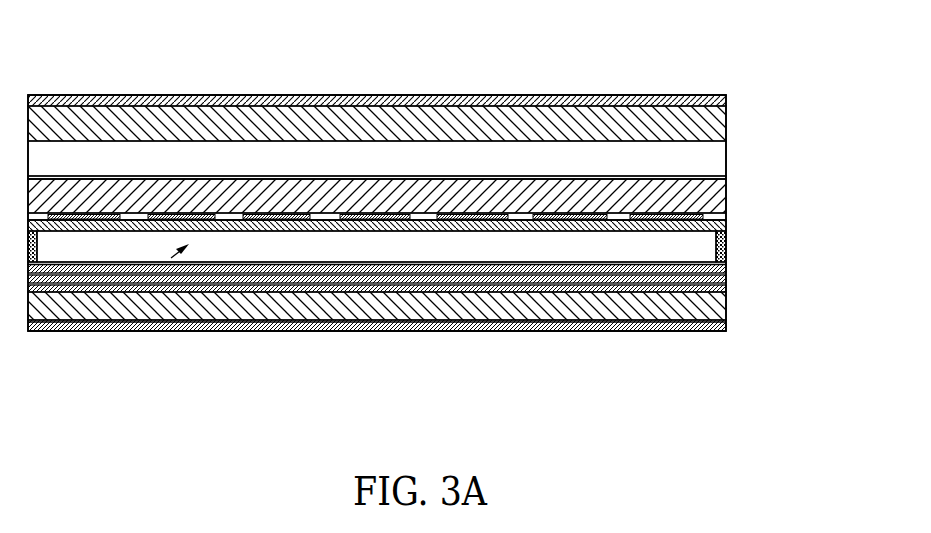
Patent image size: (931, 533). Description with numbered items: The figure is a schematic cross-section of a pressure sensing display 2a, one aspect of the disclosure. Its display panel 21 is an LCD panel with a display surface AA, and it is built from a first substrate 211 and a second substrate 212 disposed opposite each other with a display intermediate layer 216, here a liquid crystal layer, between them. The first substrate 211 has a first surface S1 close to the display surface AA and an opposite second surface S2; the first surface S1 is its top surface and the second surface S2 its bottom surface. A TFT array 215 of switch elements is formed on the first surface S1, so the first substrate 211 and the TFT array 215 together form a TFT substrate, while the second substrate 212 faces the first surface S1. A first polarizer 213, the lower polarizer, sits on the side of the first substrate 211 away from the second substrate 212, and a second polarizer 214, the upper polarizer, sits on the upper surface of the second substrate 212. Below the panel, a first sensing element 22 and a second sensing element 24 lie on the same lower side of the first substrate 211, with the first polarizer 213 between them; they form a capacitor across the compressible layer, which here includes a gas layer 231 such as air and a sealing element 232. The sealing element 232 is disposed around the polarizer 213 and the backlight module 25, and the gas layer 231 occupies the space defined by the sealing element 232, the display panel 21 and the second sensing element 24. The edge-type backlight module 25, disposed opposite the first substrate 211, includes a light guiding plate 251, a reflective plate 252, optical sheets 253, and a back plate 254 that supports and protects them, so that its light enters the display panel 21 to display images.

The pressure sensing display 2a is at (124, 45).
The display panel 21 is at (432, 212).
The first substrate 211 is at (720, 205).
The second substrate 212 is at (718, 128).
The first polarizer 213 is at (408, 223).
The second polarizer 214 is at (726, 101).
The TFT array 215 is at (720, 178).
The display intermediate layer 216 is at (702, 163).
The first sensing element 22 is at (468, 216).
The gas layer 231 is at (163, 263).
The sealing element 232 is at (37, 247).
The second sensing element 24 is at (581, 265).
The backlight module 25 is at (429, 323).
The light guiding plate 251 is at (718, 304).
The reflective plate 252 is at (726, 325).
The optical sheets 253 is at (728, 265).
The back plate 254 is at (407, 356).
The first surface S1 is at (477, 179).
The second surface S2 is at (523, 221).
The display surface AA is at (585, 95).